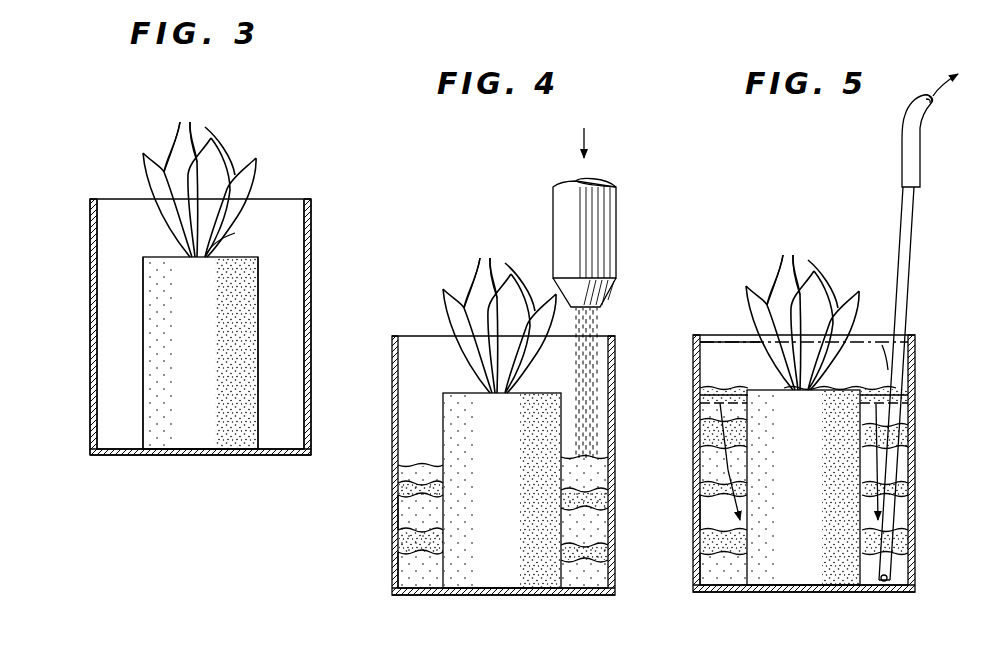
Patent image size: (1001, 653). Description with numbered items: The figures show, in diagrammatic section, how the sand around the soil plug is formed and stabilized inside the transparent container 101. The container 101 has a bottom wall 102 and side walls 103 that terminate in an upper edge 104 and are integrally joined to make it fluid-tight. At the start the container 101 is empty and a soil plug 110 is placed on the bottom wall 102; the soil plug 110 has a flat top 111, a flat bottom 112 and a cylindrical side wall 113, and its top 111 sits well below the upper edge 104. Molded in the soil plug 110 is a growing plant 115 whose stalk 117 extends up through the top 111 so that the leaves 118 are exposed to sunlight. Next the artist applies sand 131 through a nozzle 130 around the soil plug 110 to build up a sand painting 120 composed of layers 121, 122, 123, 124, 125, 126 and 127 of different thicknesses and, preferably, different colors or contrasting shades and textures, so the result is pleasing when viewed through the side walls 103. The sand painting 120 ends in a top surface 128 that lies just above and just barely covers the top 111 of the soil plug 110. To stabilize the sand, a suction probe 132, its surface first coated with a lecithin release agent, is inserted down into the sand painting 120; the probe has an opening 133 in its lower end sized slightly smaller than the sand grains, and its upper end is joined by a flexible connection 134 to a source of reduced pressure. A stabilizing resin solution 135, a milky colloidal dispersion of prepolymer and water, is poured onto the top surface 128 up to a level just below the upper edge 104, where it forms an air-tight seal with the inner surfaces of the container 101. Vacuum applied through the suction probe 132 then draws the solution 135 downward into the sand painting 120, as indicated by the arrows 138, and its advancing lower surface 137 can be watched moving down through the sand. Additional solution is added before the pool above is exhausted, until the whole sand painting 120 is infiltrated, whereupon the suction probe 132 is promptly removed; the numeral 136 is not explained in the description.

In FIG. 3, the container 101 is at (88, 232).
In FIG. 3, the bottom wall 102 is at (125, 452).
In FIG. 4, the bottom wall 102 is at (495, 595).
In FIG. 5, the bottom wall 102 is at (731, 593).
In FIG. 3, the side walls 103 is at (90, 278).
In FIG. 4, the side walls 103 is at (392, 424).
In FIG. 5, the side walls 103 is at (915, 376).
In FIG. 3, the upper edge 104 is at (95, 198).
In FIG. 4, the upper edge 104 is at (398, 336).
In FIG. 5, the upper edge 104 is at (912, 335).
In FIG. 3, the soil plug 110 is at (240, 288).
In FIG. 3, the top 111 is at (153, 257).
In FIG. 5, the top 111 is at (882, 345).
In FIG. 3, the bottom 112 is at (182, 455).
In FIG. 3, the side wall 113 is at (258, 333).
In FIG. 3, the plant 115 is at (238, 195).
In FIG. 4, the plant 115 is at (487, 357).
In FIG. 5, the plant 115 is at (790, 353).
In FIG. 3, the stalk 117 is at (235, 233).
In FIG. 5, the stalk 117 is at (820, 390).
In FIG. 3, the leaves 118 is at (188, 131).
In FIG. 4, the leaves 118 is at (476, 269).
In FIG. 5, the leaves 118 is at (792, 270).
In FIG. 4, the sand painting 120 is at (412, 510).
In FIG. 4, the layer 121 is at (406, 573).
In FIG. 5, the layer 121 is at (908, 575).
In FIG. 4, the layer 122 is at (406, 550).
In FIG. 5, the layer 122 is at (908, 548).
In FIG. 4, the layer 123 is at (406, 503).
In FIG. 5, the layer 123 is at (908, 527).
In FIG. 4, the layer 124 is at (406, 492).
In FIG. 5, the layer 124 is at (908, 504).
In FIG. 4, the layer 125 is at (406, 476).
In FIG. 5, the layer 125 is at (908, 484).
In FIG. 5, the layer 126 is at (905, 445).
In FIG. 5, the layer 127 is at (908, 408).
In FIG. 5, the top surface 128 is at (702, 382).
In FIG. 4, the nozzle 130 is at (617, 205).
In FIG. 4, the sand 131 is at (600, 326).
In FIG. 5, the suction probe 132 is at (906, 286).
In FIG. 5, the opening 133 is at (884, 584).
In FIG. 5, the flexible connection 134 is at (902, 128).
In FIG. 5, the stabilizing resin solution 135 is at (730, 342).
In FIG. 5, the upper level 136 is at (710, 340).
In FIG. 5, the advancing lower surface 137 is at (710, 408).
In FIG. 5, the arrows 138 is at (726, 457).